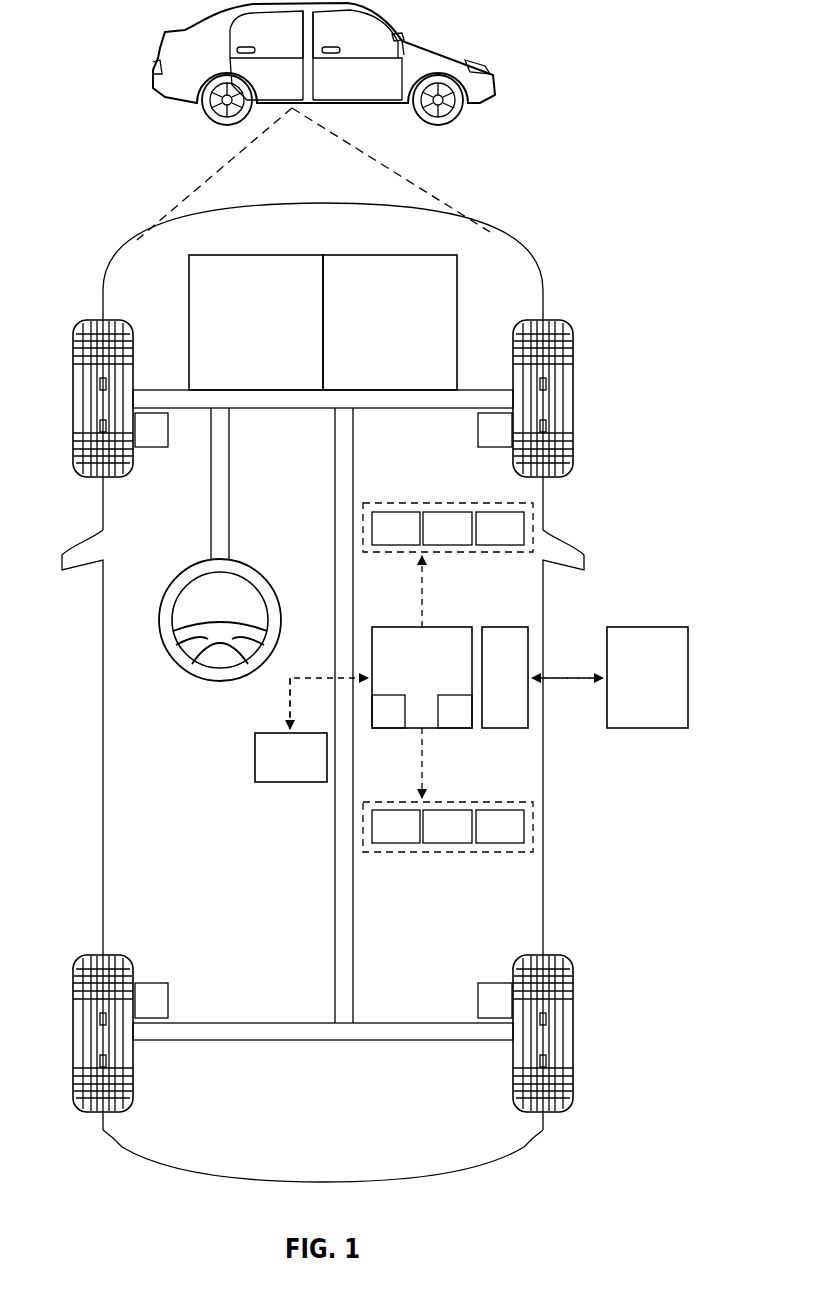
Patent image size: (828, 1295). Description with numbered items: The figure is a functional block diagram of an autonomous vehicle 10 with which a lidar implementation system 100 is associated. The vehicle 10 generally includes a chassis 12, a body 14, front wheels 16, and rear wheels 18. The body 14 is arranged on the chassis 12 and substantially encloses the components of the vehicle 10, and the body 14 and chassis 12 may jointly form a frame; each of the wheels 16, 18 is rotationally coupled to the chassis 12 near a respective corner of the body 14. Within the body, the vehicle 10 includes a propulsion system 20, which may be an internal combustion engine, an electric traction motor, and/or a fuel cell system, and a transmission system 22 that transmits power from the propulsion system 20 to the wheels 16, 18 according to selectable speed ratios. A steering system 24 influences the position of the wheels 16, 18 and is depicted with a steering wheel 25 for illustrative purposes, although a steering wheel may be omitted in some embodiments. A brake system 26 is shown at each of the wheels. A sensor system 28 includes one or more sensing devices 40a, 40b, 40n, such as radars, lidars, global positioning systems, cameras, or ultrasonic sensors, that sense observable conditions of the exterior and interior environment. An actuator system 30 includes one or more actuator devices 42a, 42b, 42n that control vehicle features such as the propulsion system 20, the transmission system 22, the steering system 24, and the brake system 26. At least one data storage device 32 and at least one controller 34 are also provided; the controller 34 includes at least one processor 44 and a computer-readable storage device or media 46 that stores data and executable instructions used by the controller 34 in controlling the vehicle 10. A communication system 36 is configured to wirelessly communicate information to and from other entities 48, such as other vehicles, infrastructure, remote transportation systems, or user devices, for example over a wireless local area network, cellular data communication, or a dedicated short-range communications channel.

The lidar implementation system 100 is at (631, 45).
The vehicle 10 is at (163, 47).
The chassis 12 is at (422, 1043).
The body 14 is at (103, 770).
The front wheels 16 is at (73, 398).
The rear wheels 18 is at (73, 1031).
The propulsion system 20 is at (242, 338).
The transmission system 22 is at (376, 338).
The steering system 24 is at (244, 441).
The steering wheel 25 is at (220, 681).
The brake system 26 is at (162, 443).
The sensor system 28 is at (410, 503).
The actuator system 30 is at (405, 853).
The data storage device 32 is at (276, 774).
The controller 34 is at (408, 691).
The communication system 36 is at (491, 691).
The sensing device 40a is at (378, 542).
The sensing device 40b is at (429, 542).
The sensing device 40n is at (482, 542).
The actuator device 42a is at (378, 840).
The actuator device 42b is at (429, 840).
The actuator device 42n is at (482, 840).
The processor 44 is at (400, 724).
The computer-readable storage device or media 46 is at (467, 724).
The other entities 48 is at (633, 691).